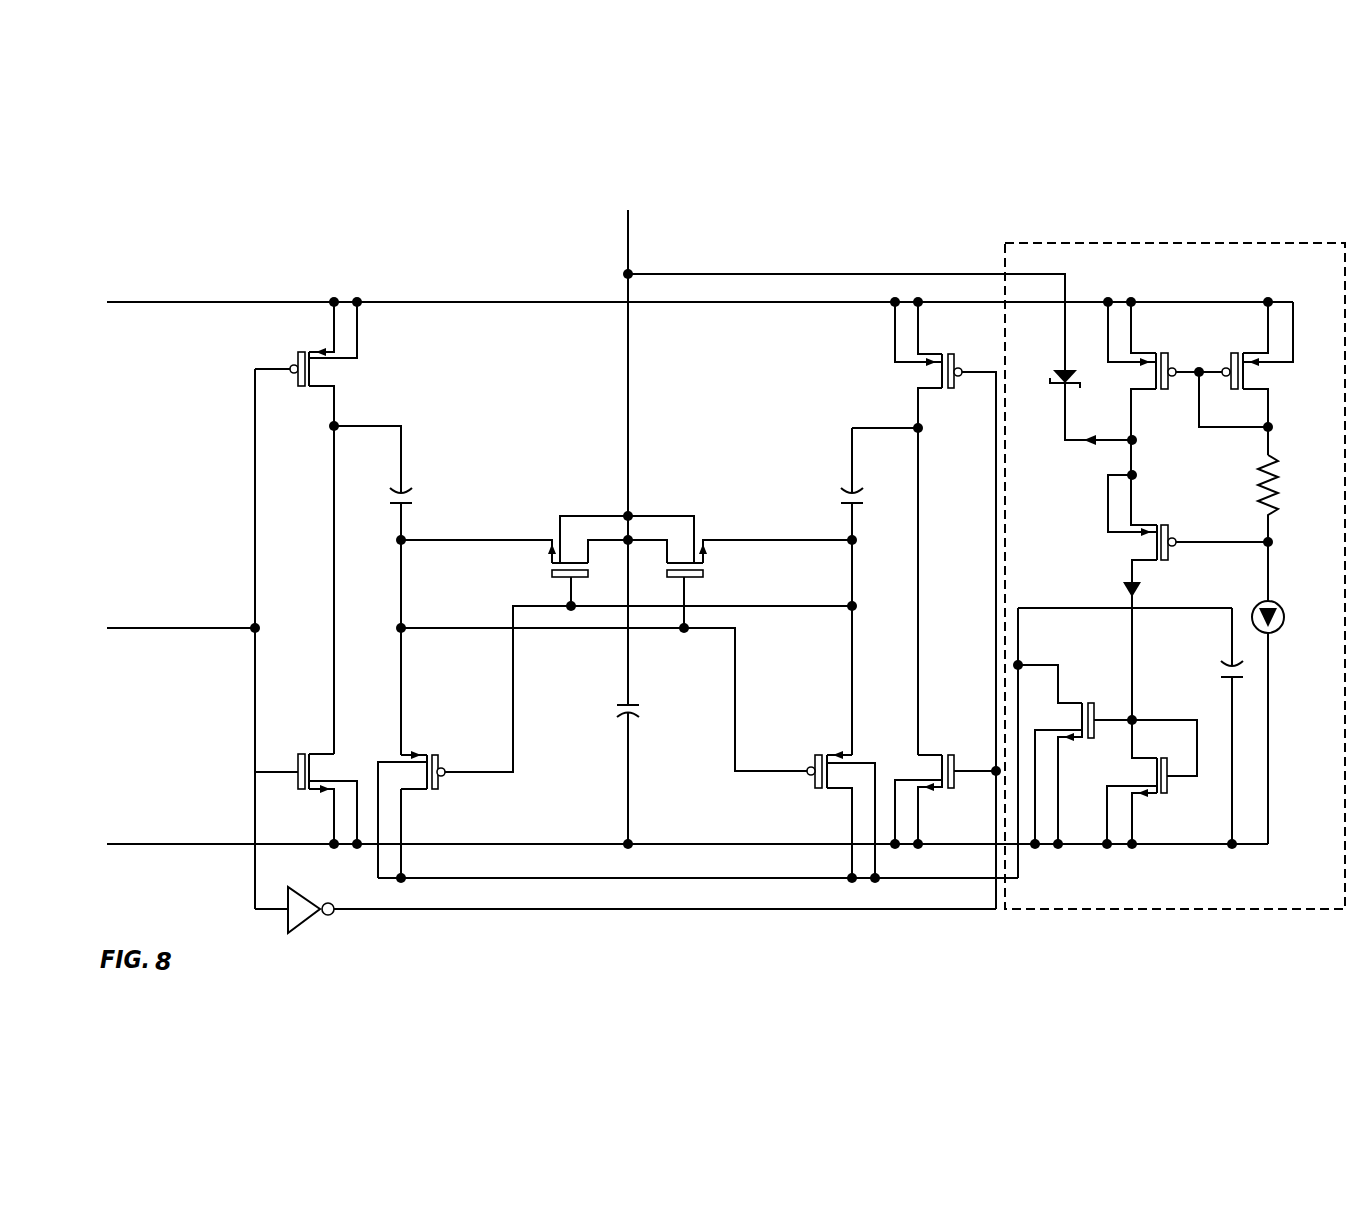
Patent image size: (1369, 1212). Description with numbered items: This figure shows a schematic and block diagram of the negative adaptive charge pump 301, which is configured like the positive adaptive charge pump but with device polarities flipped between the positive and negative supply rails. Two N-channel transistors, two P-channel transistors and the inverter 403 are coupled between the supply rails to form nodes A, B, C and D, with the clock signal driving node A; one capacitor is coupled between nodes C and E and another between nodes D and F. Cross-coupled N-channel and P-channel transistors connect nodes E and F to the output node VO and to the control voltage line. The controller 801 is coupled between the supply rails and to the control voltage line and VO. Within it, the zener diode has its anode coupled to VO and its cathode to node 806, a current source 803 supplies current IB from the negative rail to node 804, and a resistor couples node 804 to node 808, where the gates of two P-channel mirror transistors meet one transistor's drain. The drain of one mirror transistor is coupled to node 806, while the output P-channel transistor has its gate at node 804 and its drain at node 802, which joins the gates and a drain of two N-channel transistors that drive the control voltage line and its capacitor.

The negative adaptive charge pump 301 is at (357, 225).
The controller 801 is at (1175, 558).
The node 802 is at (1135, 718).
The current source 803 is at (1258, 606).
The node 804 is at (1265, 540).
The node 806 is at (1135, 473).
The node 808 is at (1270, 426).
The inverter 403 is at (305, 922).